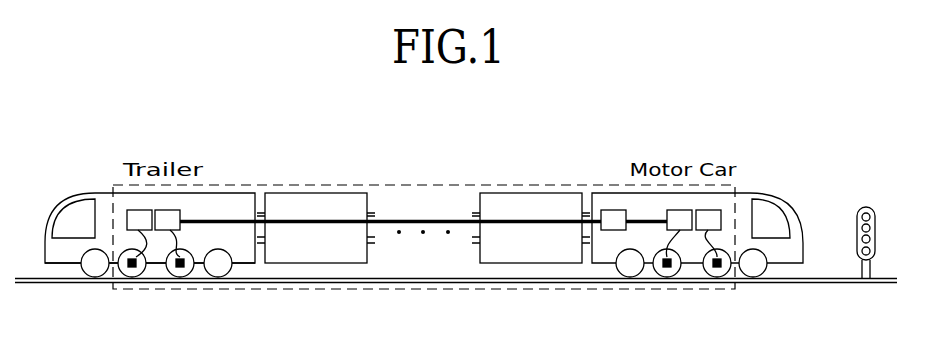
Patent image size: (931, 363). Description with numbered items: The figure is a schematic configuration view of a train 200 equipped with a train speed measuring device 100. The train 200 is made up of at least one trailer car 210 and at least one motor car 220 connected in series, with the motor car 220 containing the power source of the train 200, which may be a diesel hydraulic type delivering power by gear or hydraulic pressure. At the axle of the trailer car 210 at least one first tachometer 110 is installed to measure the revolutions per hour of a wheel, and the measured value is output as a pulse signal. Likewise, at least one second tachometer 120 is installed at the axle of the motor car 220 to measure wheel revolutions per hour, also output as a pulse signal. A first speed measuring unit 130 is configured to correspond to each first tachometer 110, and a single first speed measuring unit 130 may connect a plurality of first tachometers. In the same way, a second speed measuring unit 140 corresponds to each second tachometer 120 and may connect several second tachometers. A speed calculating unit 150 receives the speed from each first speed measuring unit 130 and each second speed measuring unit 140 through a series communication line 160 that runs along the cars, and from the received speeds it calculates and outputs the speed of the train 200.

The train speed measuring device 100 is at (421, 218).
The first tachometer 110 is at (180, 272).
The second tachometer 120 is at (717, 275).
The first speed measuring unit 130 is at (169, 210).
The second speed measuring unit 140 is at (708, 210).
The speed calculating unit 150 is at (613, 210).
The series communication line 160 is at (423, 219).
The train 200 is at (63, 204).
The trailer car 210 is at (62, 256).
The motor car 220 is at (787, 255).